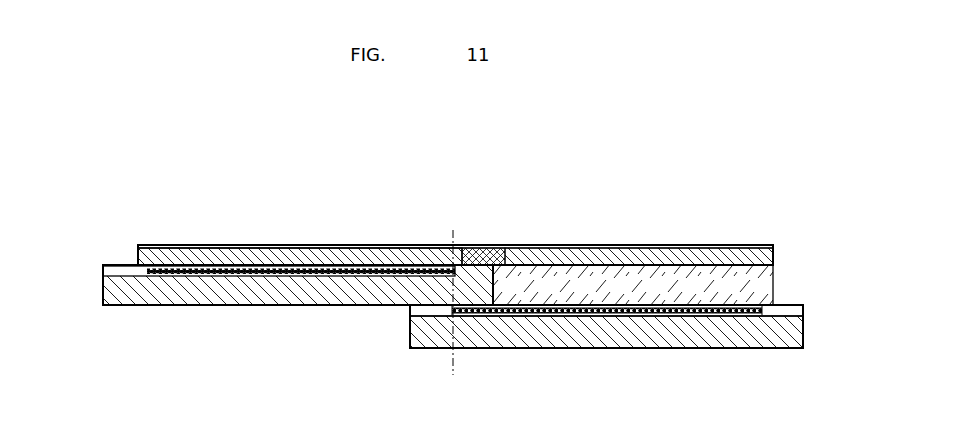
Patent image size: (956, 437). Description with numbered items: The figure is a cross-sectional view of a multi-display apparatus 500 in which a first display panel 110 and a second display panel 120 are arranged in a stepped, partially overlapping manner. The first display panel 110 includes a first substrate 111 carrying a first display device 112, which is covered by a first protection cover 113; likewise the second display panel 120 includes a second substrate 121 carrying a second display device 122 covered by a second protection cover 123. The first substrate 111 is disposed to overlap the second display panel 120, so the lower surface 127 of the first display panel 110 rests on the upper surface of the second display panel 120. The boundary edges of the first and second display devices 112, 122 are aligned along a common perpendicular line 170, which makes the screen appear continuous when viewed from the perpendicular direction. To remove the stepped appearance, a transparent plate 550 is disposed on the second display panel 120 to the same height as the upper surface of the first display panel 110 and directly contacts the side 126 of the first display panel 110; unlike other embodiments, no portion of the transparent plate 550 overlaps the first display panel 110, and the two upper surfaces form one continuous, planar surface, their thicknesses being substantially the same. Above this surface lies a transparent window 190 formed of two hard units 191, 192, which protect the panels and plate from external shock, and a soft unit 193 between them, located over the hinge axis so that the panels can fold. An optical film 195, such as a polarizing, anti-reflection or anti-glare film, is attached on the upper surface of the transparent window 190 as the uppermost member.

The multi-display apparatus 500 is at (103, 188).
The first display panel 110 is at (133, 308).
The first substrate 111 is at (103, 293).
The first display device 112 is at (178, 262).
The first protection cover 113 is at (103, 268).
The second display panel 120 is at (745, 350).
The second substrate 121 is at (803, 333).
The second display device 122 is at (765, 303).
The second protection cover 123 is at (803, 309).
The side 126 is at (493, 287).
The lower surface 127 is at (317, 305).
The perpendicular line 170 is at (453, 315).
The transparent window 190 is at (627, 193).
The hard unit 191 is at (358, 248).
The hard unit 192 is at (628, 248).
The soft unit 193 is at (503, 248).
The optical film 195 is at (765, 248).
The transparent plate 550 is at (703, 283).